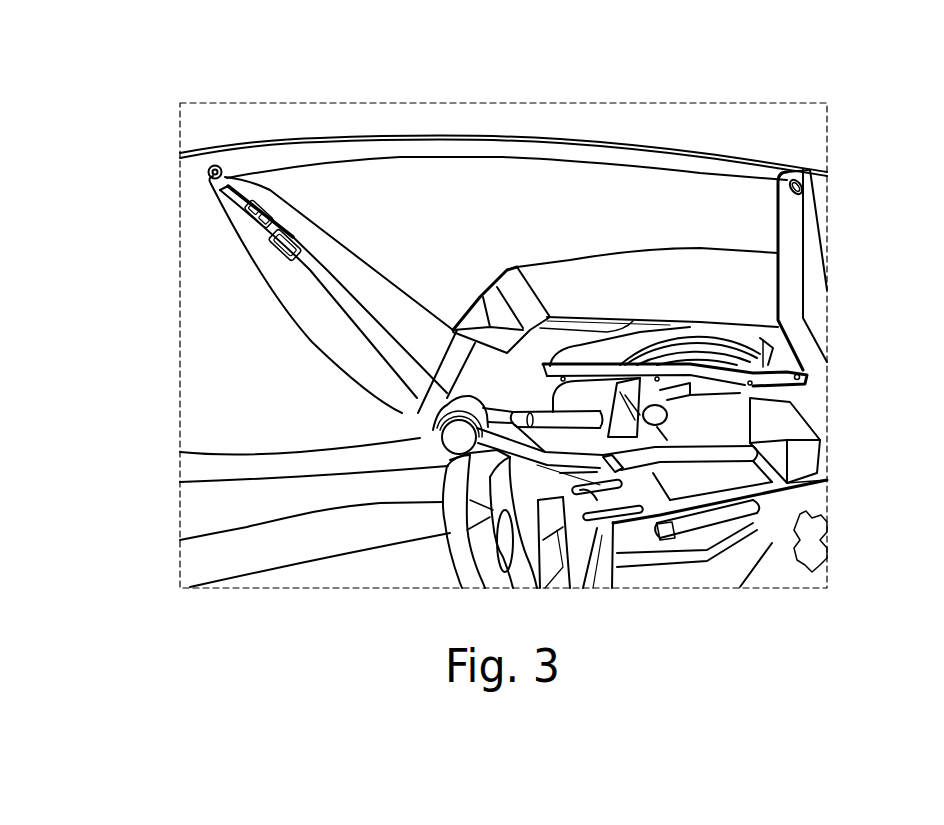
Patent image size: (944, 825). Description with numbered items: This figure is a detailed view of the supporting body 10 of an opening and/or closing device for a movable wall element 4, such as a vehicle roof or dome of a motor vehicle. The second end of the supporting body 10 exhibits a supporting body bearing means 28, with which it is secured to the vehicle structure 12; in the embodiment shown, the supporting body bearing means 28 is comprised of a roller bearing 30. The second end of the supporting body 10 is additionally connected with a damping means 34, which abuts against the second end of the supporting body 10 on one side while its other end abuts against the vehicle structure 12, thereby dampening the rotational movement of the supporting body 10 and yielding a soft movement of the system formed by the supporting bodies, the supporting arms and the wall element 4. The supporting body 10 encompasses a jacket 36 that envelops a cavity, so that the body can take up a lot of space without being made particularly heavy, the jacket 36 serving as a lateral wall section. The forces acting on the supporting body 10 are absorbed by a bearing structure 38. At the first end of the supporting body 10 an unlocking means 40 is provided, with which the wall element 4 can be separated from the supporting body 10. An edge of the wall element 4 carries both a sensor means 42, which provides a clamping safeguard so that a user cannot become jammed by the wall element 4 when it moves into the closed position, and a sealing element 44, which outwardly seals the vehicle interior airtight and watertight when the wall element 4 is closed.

The movable wall element 4 is at (503, 104).
The sensor means 42 is at (503, 111).
The sealing element 44 is at (465, 136).
The unlocking means 40 is at (212, 176).
The supporting body 10 is at (298, 286).
The damping means 34 is at (300, 222).
The jacket 36 is at (380, 300).
The bearing structure 38 is at (333, 293).
The supporting body bearing means 28 is at (386, 421).
The roller bearing 30 is at (433, 410).
The vehicle structure 12 is at (198, 470).